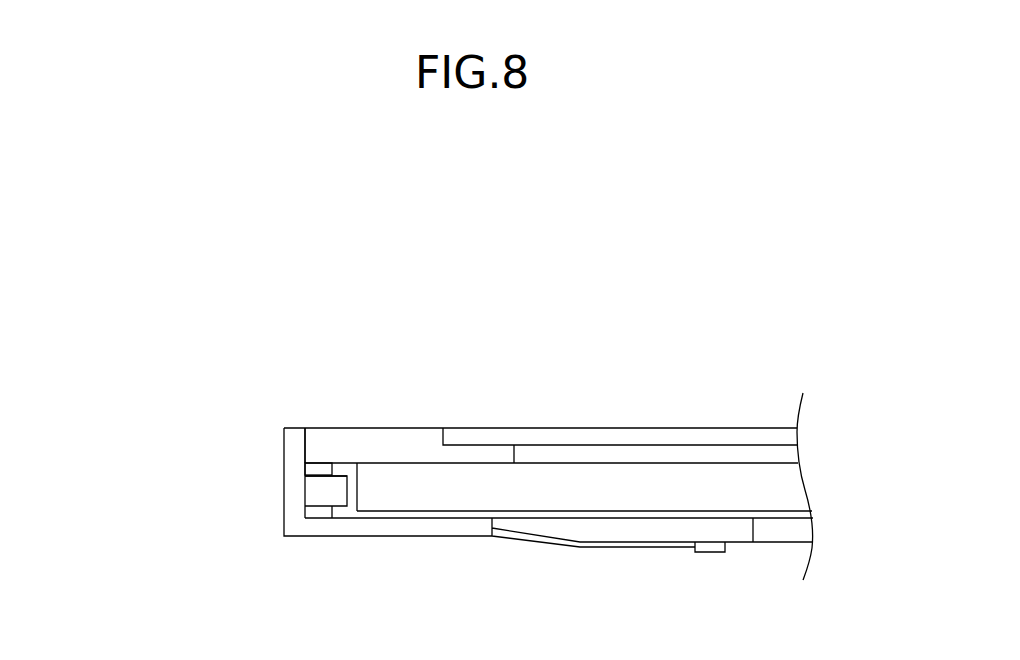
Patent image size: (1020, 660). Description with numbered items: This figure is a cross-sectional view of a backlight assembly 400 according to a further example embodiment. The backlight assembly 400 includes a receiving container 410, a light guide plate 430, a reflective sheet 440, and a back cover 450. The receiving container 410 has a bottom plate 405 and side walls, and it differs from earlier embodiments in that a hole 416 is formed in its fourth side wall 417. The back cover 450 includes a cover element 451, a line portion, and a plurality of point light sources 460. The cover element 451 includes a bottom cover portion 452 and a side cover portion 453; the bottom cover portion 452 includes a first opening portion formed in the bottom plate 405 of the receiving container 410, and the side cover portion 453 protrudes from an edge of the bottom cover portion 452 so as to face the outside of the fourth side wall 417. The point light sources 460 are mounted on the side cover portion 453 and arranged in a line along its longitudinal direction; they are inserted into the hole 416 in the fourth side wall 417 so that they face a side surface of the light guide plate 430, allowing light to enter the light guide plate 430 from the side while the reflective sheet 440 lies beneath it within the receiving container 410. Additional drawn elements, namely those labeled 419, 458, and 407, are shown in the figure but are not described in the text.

The backlight assembly 400 is at (467, 270).
The fourth side wall 417 is at (313, 442).
The hole 416 is at (320, 470).
The window 419 is at (472, 445).
The receiving container 410 is at (546, 423).
The light guide plate 430 is at (627, 483).
The reflective sheet 440 is at (705, 512).
The back cover 450 is at (143, 453).
The point light sources 460 is at (312, 482).
The cover element 451 is at (204, 480).
The side cover portion 453 is at (300, 491).
The bottom cover portion 452 is at (377, 530).
The flexible circuit 458 is at (627, 547).
The bottom plate 405 is at (733, 533).
The pad portion 407 is at (788, 530).